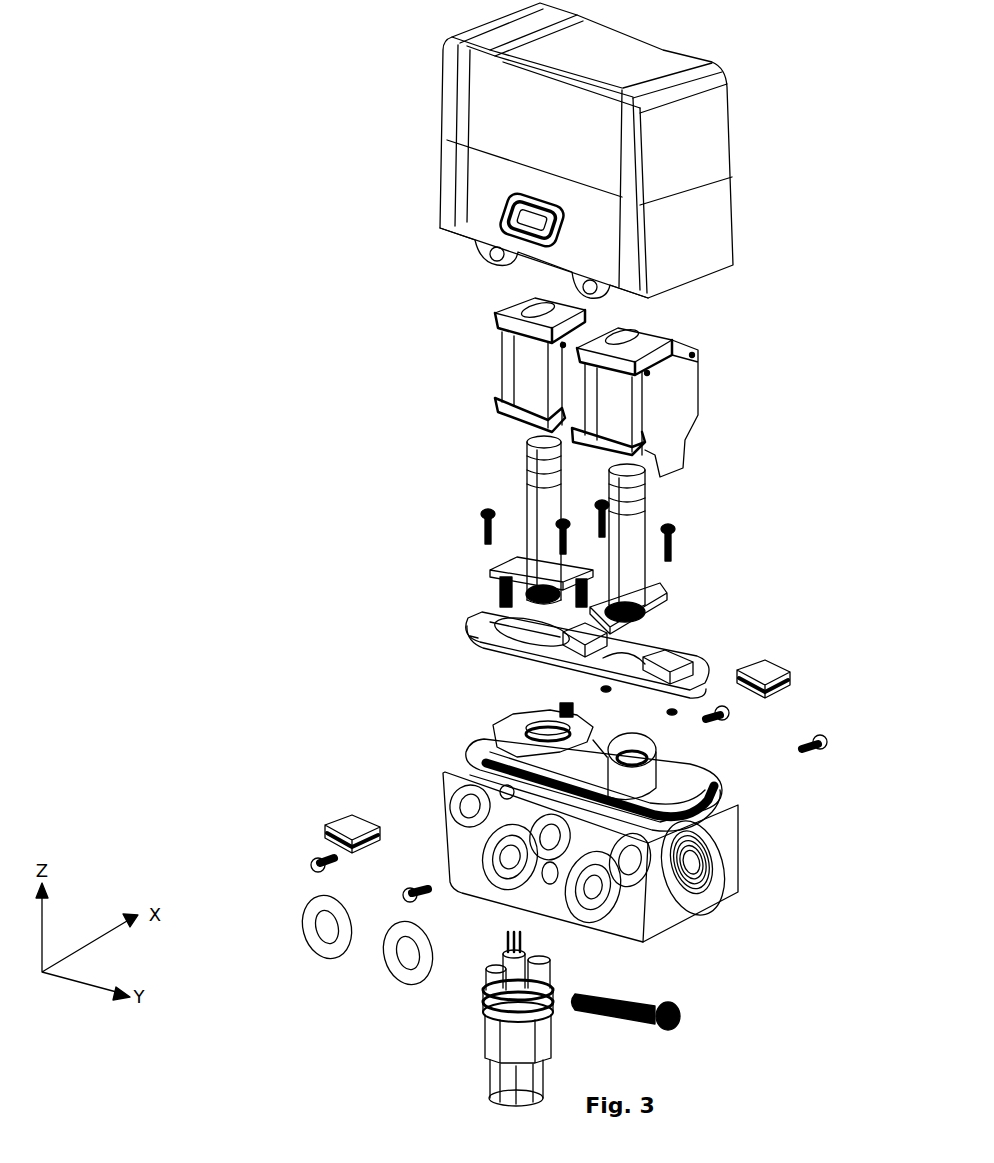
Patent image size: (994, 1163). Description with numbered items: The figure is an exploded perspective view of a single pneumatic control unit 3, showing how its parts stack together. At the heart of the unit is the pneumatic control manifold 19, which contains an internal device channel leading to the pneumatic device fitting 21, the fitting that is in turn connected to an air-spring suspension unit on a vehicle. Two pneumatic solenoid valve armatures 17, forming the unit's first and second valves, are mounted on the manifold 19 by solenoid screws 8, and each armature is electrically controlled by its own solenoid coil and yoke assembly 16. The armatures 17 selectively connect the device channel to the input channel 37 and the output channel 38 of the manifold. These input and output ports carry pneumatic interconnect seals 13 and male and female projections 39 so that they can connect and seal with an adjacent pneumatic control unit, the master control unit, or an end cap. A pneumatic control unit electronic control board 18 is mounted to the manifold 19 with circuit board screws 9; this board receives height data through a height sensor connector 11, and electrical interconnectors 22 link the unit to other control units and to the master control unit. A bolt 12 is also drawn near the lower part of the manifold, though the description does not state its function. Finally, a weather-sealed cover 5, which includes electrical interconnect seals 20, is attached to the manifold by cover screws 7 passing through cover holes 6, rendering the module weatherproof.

The pneumatic control unit 3 is at (398, 71).
The weather-sealed cover 5 is at (437, 209).
The cover holes 6 is at (590, 290).
The cover screws 7 is at (400, 890).
The solenoid screws 8 is at (495, 590).
The circuit board screws 9 is at (480, 518).
The height sensor connector 11 is at (477, 1062).
The bolt 12 is at (680, 1020).
The pneumatic interconnect seals 13 is at (395, 975).
The solenoid coil and yoke assembly 16 is at (507, 366).
The pneumatic solenoid valve armatures 17 is at (520, 483).
The pneumatic control unit electronic control board 18 is at (510, 648).
The pneumatic control manifold 19 is at (733, 823).
The electrical interconnect seals 20 is at (507, 233).
The pneumatic device fitting 21 is at (705, 883).
The electrical interconnectors 22 is at (333, 815).
The input channel 37 is at (618, 900).
The output channel 38 is at (483, 842).
The male and female projections 39 is at (707, 858).